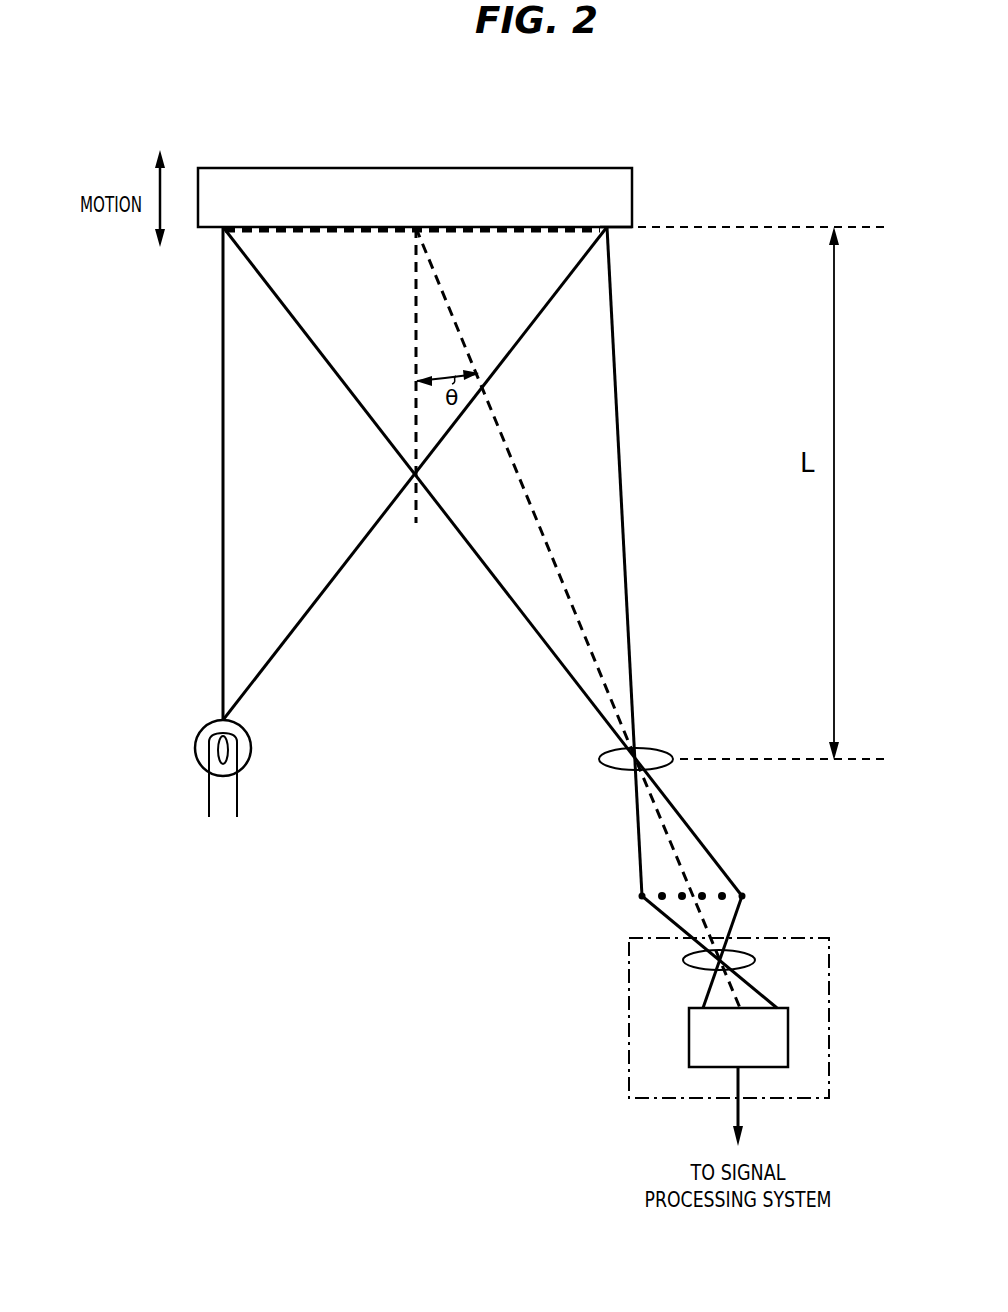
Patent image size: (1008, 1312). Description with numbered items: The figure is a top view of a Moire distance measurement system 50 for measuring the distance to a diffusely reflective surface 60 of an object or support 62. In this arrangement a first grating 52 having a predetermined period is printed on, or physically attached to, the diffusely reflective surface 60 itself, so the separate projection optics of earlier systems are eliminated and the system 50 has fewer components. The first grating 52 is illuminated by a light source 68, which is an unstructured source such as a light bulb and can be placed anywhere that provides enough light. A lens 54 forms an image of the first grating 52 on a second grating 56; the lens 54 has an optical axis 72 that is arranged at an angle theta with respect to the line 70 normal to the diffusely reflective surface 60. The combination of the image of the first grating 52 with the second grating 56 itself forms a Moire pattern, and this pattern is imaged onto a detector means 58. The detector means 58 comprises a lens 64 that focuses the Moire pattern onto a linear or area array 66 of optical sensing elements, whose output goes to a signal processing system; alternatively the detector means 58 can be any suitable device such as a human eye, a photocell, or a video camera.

The Moire distance measurement system 50 is at (583, 121).
The first grating 52 is at (255, 232).
The lens 54 is at (600, 756).
The second grating 56 is at (742, 896).
The detector means 58 is at (805, 938).
The diffusely reflective surface 60 is at (620, 229).
The object or support 62 is at (292, 168).
The lens 64 is at (683, 960).
The linear or area array of optical sensing elements 66 is at (689, 1028).
The light source 68 is at (252, 748).
The normal line 70 is at (410, 321).
The optical axis 72 is at (537, 497).